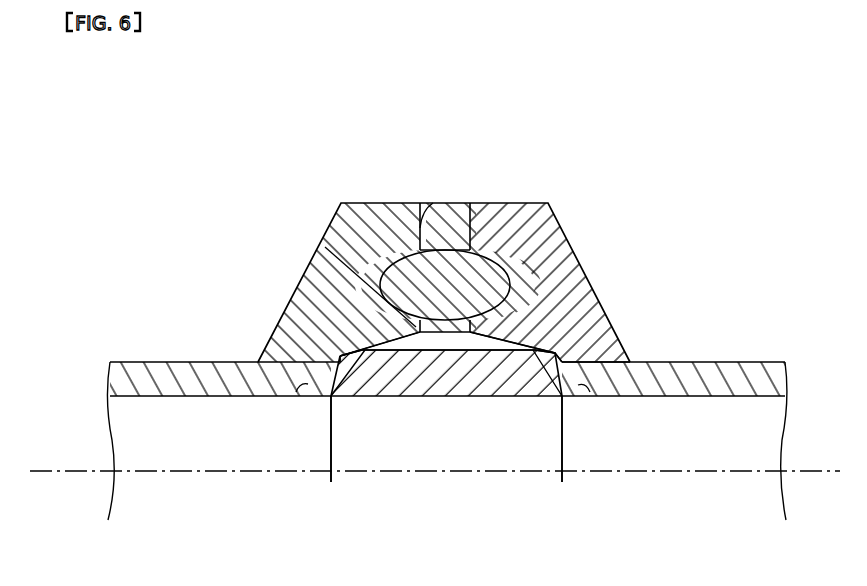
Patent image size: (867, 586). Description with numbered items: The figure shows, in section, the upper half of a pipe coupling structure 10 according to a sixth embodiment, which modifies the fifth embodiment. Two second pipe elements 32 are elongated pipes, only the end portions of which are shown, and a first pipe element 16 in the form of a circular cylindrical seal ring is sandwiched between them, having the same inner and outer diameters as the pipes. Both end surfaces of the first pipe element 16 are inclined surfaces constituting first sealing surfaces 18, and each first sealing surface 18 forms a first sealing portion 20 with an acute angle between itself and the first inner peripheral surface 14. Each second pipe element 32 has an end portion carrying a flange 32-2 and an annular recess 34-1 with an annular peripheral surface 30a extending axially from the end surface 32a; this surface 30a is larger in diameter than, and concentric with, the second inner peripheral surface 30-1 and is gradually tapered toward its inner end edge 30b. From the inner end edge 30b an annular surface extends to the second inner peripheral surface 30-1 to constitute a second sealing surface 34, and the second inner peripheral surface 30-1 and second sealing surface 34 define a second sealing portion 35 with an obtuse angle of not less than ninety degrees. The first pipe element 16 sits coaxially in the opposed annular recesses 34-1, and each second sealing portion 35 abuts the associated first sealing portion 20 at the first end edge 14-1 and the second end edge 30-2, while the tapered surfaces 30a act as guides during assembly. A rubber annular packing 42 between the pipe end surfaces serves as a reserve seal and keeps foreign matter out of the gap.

The pipe coupling structure 10 is at (435, 267).
The first inner peripheral surface 14 is at (445, 439).
The first end edge 14-1 is at (329, 466).
The first pipe element 16 is at (512, 283).
The first sealing surface 18 is at (340, 362).
The first sealing portion 20 is at (347, 398).
The second inner peripheral surface 30-1 is at (178, 397).
The second end edge 30-2 is at (332, 447).
The annular peripheral surface 30a is at (418, 331).
The inner end edge 30b is at (340, 353).
The second pipe element 32 is at (434, 247).
The flange 32-2 is at (365, 203).
The end surface 32a is at (489, 232).
The second sealing surface 34 is at (406, 329).
The annular recess 34-1 is at (325, 247).
The second sealing portion 35 is at (300, 384).
The annular packing 42 is at (448, 203).